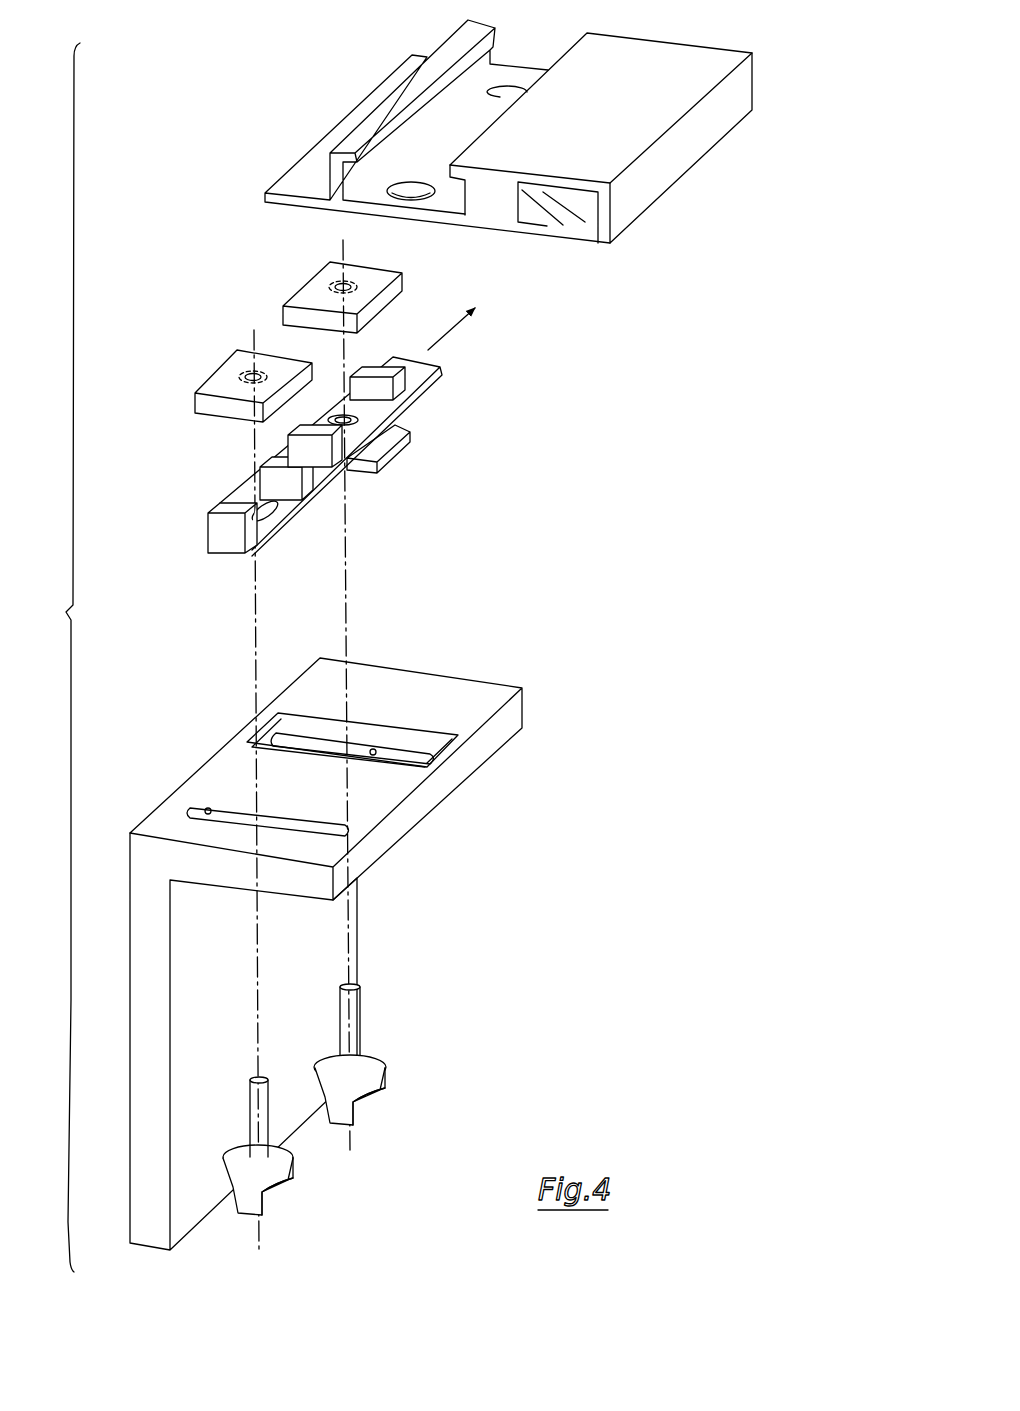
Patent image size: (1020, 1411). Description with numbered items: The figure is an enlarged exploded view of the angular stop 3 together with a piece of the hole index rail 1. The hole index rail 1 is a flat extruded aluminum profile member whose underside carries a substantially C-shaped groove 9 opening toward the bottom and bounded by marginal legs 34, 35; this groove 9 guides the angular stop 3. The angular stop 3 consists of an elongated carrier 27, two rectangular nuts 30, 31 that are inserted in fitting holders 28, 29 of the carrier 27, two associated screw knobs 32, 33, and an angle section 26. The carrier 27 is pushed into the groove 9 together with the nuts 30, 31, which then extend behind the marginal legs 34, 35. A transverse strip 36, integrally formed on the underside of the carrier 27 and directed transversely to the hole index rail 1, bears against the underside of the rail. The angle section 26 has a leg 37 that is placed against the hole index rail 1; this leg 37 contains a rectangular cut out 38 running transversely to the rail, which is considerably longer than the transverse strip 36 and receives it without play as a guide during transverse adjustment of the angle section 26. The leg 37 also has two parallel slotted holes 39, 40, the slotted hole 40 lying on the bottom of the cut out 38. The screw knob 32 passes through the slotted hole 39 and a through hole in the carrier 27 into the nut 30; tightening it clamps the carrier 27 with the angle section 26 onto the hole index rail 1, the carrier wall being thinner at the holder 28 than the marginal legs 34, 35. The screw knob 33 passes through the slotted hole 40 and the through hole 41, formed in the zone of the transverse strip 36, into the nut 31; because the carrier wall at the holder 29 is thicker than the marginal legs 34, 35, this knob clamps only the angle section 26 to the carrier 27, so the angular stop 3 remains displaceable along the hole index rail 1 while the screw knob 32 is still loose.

The hole index rail 1 is at (665, 165).
The angular stop 3 is at (582, 513).
The substantially C-shaped groove 9 is at (557, 243).
The angle section 26 is at (357, 931).
The carrier 27 is at (206, 535).
The holder 28 is at (255, 500).
The holder 29 is at (329, 456).
The rectangular nut 30 is at (235, 367).
The rectangular nut 31 is at (313, 290).
The screw knob 32 is at (277, 1193).
The screw knob 33 is at (368, 1102).
The marginal leg 34 is at (533, 231).
The marginal leg 35 is at (578, 243).
The transverse strip 36 is at (400, 452).
The leg 37 is at (483, 693).
The rectangular cut out 38 is at (422, 738).
The slotted hole 39 is at (205, 810).
The slotted hole 40 is at (373, 749).
The through hole 41 is at (338, 413).